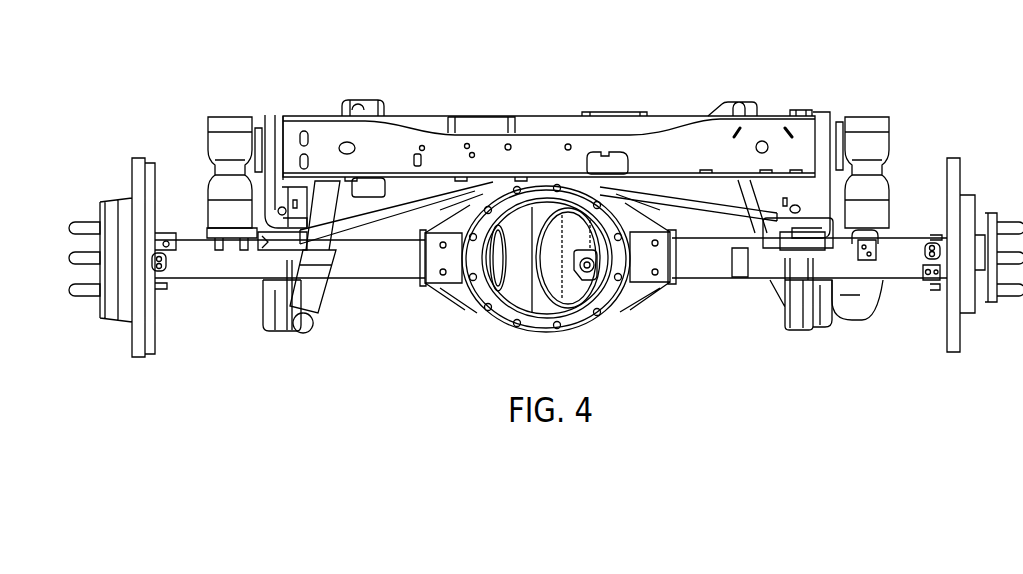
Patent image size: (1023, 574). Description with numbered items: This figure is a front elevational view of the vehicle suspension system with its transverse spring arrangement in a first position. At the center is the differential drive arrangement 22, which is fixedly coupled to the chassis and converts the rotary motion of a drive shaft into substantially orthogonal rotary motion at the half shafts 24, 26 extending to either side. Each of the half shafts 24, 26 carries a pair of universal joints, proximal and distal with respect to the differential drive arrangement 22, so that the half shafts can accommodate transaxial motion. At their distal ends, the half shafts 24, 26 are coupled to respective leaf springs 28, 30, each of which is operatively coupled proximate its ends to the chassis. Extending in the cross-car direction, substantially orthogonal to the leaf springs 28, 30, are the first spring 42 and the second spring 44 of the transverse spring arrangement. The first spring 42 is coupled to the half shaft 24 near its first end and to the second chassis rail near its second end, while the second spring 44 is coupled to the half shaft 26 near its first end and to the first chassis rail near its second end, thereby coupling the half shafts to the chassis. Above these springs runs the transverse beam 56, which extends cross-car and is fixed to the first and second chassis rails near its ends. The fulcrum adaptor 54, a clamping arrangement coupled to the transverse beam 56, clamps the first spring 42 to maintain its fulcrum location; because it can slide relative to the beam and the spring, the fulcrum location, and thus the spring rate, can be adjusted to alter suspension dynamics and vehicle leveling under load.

The differential drive arrangement 22 is at (520, 290).
The half shaft 24 is at (848, 266).
The half shaft 26 is at (222, 268).
The leaf spring 28 is at (866, 127).
The leaf spring 30 is at (233, 130).
The first spring 42 is at (720, 220).
The second spring 44 is at (383, 230).
The fulcrum adaptor 54 is at (485, 127).
The transverse beam 56 is at (550, 125).